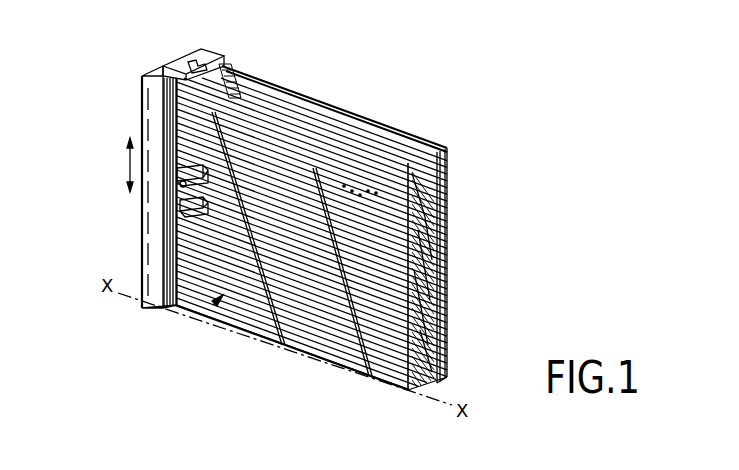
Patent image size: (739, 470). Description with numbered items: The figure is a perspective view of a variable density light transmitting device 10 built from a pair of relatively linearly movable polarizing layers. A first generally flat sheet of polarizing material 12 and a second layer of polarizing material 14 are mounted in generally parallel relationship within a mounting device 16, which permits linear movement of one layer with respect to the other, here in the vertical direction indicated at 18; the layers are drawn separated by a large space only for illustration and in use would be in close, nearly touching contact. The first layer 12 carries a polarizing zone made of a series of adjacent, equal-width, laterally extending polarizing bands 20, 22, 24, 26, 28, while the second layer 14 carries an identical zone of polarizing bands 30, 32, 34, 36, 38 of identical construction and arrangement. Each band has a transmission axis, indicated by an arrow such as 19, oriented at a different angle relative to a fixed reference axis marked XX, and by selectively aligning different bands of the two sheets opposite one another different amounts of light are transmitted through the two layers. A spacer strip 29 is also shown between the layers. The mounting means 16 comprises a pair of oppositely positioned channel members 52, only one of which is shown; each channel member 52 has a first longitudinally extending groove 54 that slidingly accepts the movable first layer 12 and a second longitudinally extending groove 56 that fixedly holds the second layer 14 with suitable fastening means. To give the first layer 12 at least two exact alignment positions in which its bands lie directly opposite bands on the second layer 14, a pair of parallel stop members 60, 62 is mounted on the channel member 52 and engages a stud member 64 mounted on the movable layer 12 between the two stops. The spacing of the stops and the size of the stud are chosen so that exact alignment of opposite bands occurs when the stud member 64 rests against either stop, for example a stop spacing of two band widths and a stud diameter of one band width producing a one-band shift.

The variable density light transmitting device 10 is at (390, 42).
The first layer of polarizing material 12 is at (428, 292).
The second layer of polarizing material 14 is at (470, 249).
The mounting device 16 is at (122, 98).
The vertical direction of movement 18 is at (127, 162).
The transmission axis arrow 19 is at (213, 305).
The polarizing band 20 is at (376, 192).
The polarizing band 22 is at (368, 190).
The polarizing band 24 is at (360, 194).
The polarizing band 26 is at (352, 190).
The polarizing band 28 is at (344, 185).
The spacer strip 29 is at (445, 330).
The polarizing band 30 is at (445, 172).
The polarizing band 32 is at (448, 180).
The polarizing band 34 is at (448, 192).
The polarizing band 36 is at (448, 205).
The polarizing band 38 is at (448, 218).
The channel member 52 is at (142, 242).
The first longitudinally extending groove 54 is at (160, 66).
The second longitudinally extending groove 56 is at (205, 66).
The stop member 60 is at (175, 165).
The stop member 62 is at (180, 201).
The stud member 64 is at (179, 186).